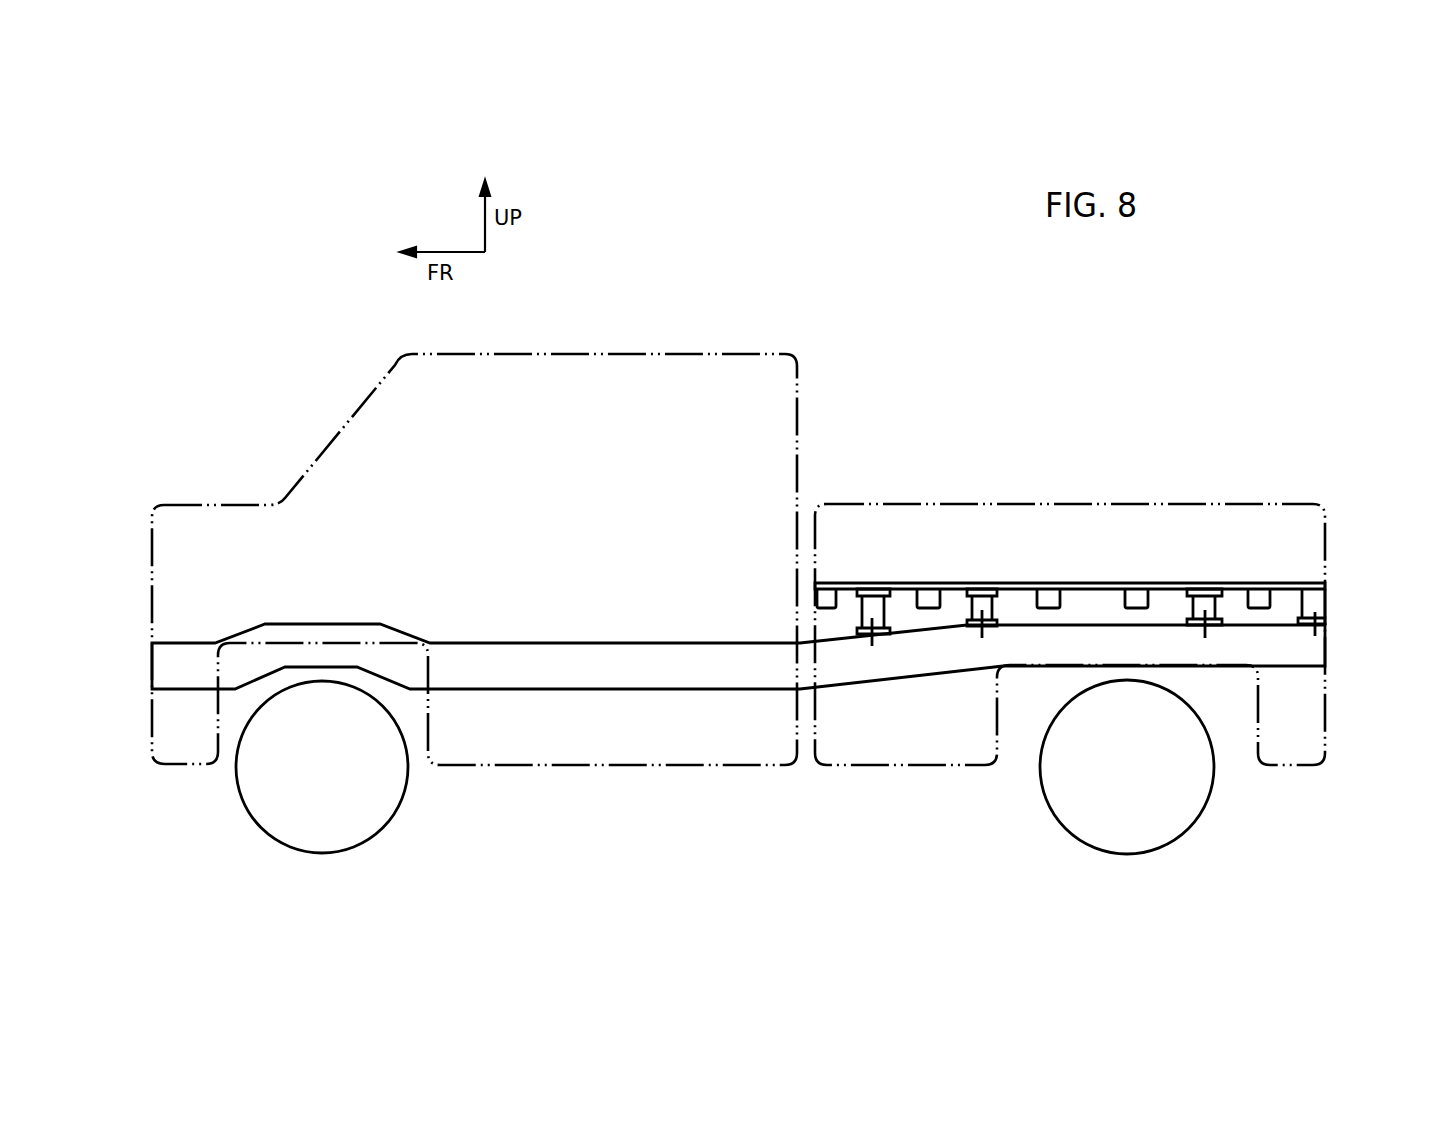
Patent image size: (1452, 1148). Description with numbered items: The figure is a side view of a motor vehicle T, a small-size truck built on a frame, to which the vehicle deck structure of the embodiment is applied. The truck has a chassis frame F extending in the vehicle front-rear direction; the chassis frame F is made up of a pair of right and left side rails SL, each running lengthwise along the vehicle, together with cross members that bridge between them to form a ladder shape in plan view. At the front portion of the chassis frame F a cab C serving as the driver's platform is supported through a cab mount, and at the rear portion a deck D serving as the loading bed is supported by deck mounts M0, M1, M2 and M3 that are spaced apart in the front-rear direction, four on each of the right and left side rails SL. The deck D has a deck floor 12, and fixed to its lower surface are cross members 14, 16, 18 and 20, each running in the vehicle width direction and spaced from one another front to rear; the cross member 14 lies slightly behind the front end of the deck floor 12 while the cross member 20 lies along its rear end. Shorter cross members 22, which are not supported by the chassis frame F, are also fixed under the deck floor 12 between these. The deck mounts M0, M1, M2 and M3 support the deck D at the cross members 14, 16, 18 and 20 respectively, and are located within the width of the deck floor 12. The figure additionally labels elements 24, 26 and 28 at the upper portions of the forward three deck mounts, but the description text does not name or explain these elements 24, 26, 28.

The deck floor 12 is at (1108, 583).
The cross member 14 is at (868, 615).
The cross member 16 is at (992, 606).
The cross member 18 is at (1213, 608).
The cross member 20 is at (1313, 603).
The cross member 22 is at (824, 600).
The first mount upper bracket 24 is at (870, 594).
The second mount upper bracket 26 is at (986, 594).
The third mount upper bracket 28 is at (1200, 592).
The motor vehicle T is at (866, 303).
The cab C is at (708, 353).
The deck D is at (981, 503).
The chassis frame F is at (628, 643).
The side rail SL is at (710, 665).
The deck mount M0 is at (884, 681).
The deck mount M1 is at (1007, 681).
The deck mount M2 is at (1240, 670).
The deck mount M3 is at (1355, 657).